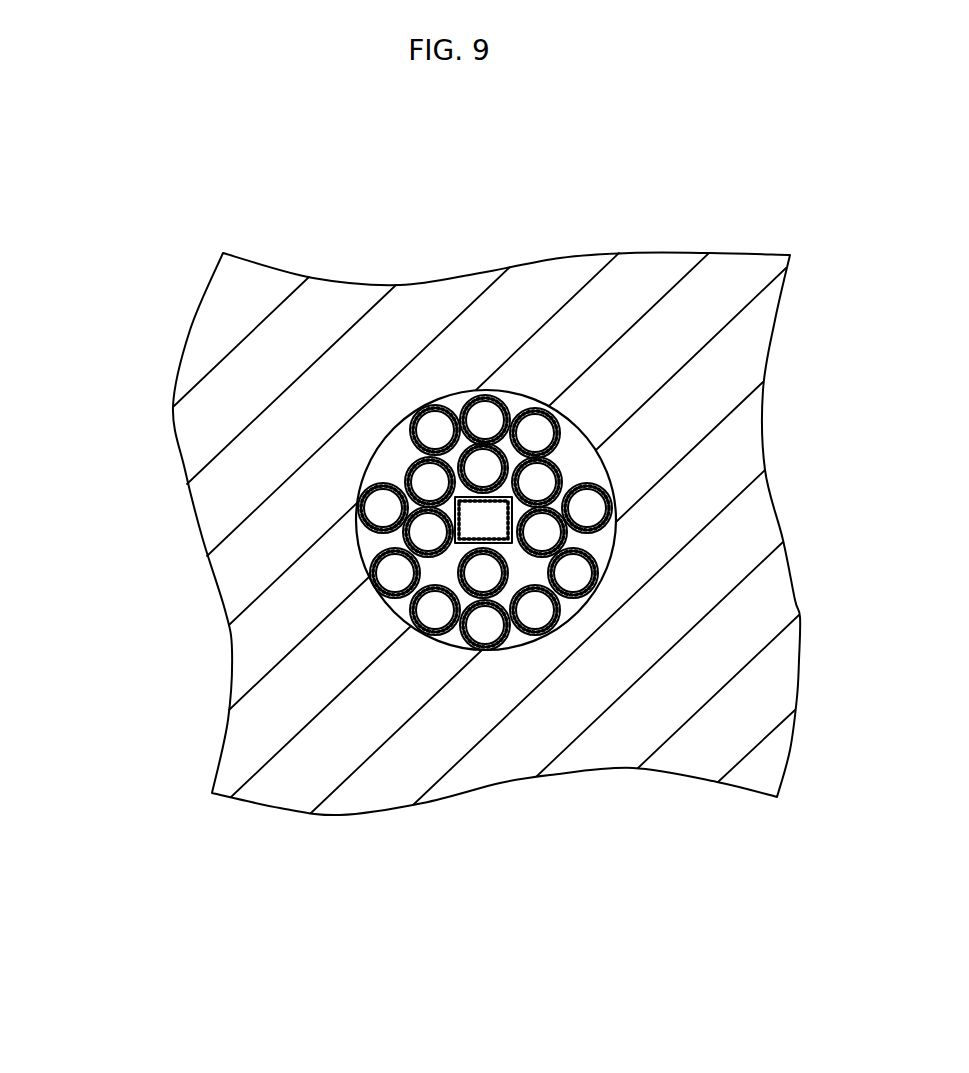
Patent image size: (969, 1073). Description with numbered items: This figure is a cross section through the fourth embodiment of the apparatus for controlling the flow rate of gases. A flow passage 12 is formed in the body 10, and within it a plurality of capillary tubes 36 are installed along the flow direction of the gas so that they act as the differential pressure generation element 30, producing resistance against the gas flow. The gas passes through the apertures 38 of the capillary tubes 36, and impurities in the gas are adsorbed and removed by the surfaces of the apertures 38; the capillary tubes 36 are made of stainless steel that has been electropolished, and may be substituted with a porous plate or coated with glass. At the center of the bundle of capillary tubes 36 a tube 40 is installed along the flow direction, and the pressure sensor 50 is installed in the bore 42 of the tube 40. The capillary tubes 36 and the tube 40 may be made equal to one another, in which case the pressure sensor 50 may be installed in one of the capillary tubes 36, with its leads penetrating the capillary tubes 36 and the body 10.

The body 10 is at (270, 342).
The flow passage 12 is at (374, 542).
The differential pressure generation element 30 is at (449, 535).
The capillary tube 36 is at (405, 473).
The aperture 38 is at (383, 510).
The tube 40 is at (427, 443).
The bore 42 is at (468, 532).
The pressure sensor 50 is at (413, 567).